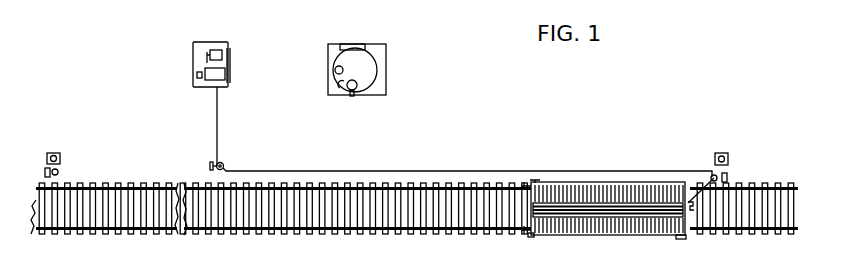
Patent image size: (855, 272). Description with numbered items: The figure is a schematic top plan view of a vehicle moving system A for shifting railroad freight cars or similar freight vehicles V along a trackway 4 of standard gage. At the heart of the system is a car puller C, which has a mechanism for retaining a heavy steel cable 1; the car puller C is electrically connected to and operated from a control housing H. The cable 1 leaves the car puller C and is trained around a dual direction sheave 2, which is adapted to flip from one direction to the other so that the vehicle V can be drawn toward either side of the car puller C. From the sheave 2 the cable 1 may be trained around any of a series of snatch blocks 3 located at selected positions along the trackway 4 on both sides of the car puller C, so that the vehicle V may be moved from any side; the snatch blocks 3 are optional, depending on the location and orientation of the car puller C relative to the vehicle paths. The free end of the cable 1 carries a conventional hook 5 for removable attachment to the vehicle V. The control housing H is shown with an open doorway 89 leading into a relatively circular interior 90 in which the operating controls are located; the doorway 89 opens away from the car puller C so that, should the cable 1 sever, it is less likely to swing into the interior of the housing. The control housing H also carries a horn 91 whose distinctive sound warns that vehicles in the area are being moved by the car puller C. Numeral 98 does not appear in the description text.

The steel cable 1 is at (215, 150).
The dual direction sheave 2 is at (224, 165).
The snatch block 3 is at (62, 170).
The trackway 4 is at (341, 234).
The hook 5 is at (694, 193).
The open doorway 89 is at (355, 44).
The circular interior 90 is at (340, 87).
The horn 91 is at (355, 93).
The indicator lamp 98 is at (336, 67).
The vehicle moving system A is at (199, 95).
The car puller C is at (241, 75).
The control housing H is at (359, 69).
The vehicle V is at (574, 237).